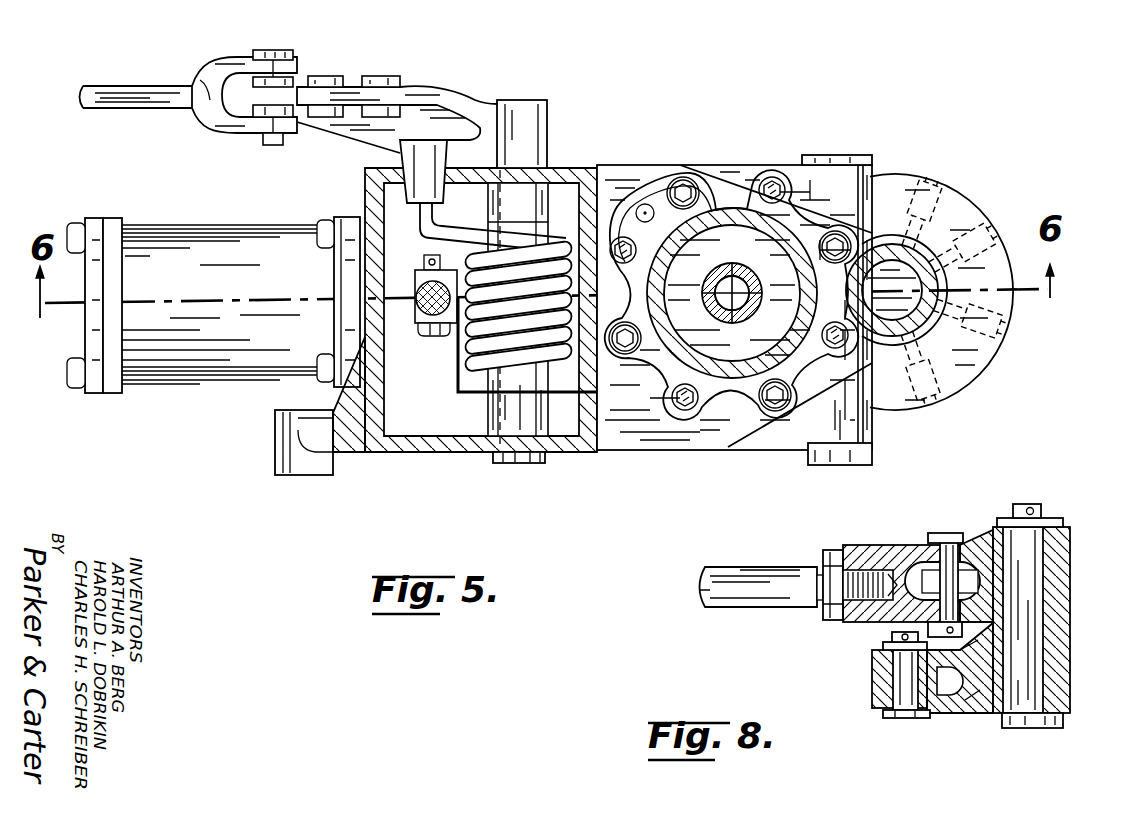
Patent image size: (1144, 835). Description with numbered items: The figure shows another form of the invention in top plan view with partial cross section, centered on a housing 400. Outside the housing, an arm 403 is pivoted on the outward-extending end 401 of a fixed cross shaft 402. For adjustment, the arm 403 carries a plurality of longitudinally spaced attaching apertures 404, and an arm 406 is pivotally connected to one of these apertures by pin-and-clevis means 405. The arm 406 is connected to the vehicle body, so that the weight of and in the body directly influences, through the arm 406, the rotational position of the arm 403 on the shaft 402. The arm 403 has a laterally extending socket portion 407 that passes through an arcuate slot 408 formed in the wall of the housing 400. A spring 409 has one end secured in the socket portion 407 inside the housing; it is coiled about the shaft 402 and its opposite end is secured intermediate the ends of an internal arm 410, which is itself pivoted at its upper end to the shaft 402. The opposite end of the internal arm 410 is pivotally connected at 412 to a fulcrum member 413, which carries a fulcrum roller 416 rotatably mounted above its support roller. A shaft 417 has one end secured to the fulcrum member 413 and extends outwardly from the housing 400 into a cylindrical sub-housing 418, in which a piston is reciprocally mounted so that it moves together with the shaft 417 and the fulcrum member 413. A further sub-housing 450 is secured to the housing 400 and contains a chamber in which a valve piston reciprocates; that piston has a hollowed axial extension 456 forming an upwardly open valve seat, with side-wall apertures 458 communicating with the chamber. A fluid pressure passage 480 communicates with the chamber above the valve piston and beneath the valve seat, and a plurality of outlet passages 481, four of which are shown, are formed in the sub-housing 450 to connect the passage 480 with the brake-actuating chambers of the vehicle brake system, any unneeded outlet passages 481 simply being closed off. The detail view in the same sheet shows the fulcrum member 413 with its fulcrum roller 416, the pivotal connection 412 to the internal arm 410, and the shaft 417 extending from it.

In FIG. 5, the housing 400 is at (430, 453).
In FIG. 5, the outward-extending end 401 is at (520, 100).
In FIG. 5, the fixed cross shaft 402 is at (521, 465).
In FIG. 5, the arm 403 is at (453, 110).
In FIG. 5, the attaching apertures 404 is at (340, 77).
In FIG. 5, the pin-and-clevis means 405 is at (267, 52).
In FIG. 5, the arm 406 is at (120, 86).
In FIG. 5, the socket portion 407 is at (400, 155).
In FIG. 5, the arcuate slot 408 is at (400, 187).
In FIG. 5, the spring 409 is at (468, 361).
In FIG. 5, the internal arm 410 is at (497, 383).
In FIG. 8, the internal arm 410 is at (880, 683).
In FIG. 8, the pivotal connection 412 is at (903, 705).
In FIG. 8, the fulcrum member 413 is at (1082, 586).
In FIG. 8, the fulcrum roller 416 is at (928, 578).
In FIG. 8, the shaft 417 is at (748, 593).
In FIG. 5, the sub-housing 418 is at (251, 203).
In FIG. 5, the sub-housing 450 is at (717, 220).
In FIG. 5, the axial extension 456 is at (760, 252).
In FIG. 5, the side wall apertures 458 is at (727, 323).
In FIG. 5, the fluid pressure passage 480 is at (911, 282).
In FIG. 5, the outlet passages 481 is at (930, 172).